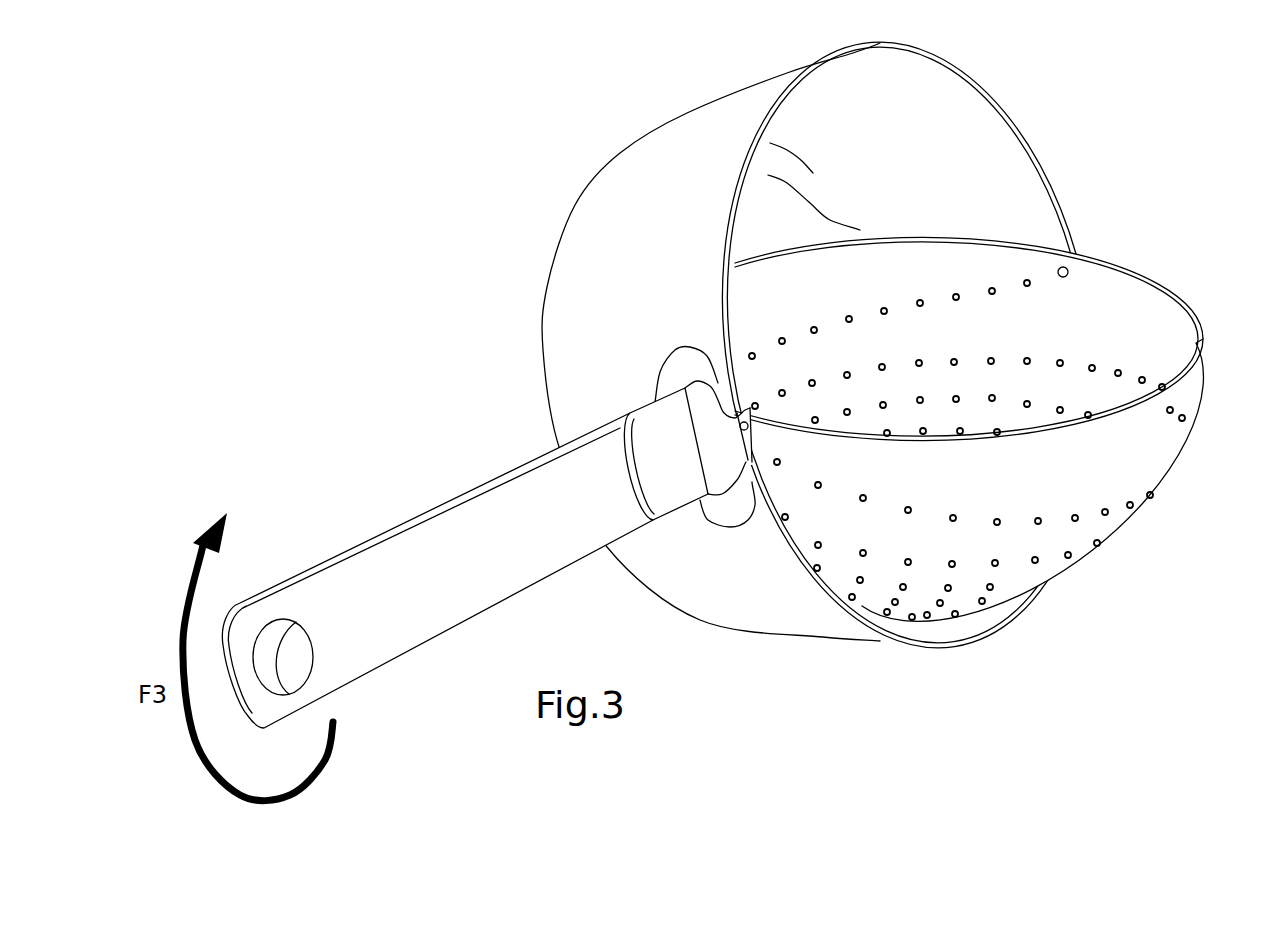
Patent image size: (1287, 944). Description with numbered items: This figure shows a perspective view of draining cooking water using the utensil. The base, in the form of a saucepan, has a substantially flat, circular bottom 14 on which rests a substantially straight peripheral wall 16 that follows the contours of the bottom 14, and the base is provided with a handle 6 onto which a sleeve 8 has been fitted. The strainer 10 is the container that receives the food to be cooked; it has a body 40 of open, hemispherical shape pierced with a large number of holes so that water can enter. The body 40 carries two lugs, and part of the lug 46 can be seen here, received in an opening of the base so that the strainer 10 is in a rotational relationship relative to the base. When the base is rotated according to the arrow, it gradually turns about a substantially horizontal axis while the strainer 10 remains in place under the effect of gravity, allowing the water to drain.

The handle 6 is at (444, 519).
The sleeve 8 is at (680, 406).
The strainer 10 is at (752, 372).
The bottom 14 is at (805, 212).
The peripheral wall 16 is at (637, 173).
The body 40 is at (1160, 462).
The lug 46 is at (1062, 266).